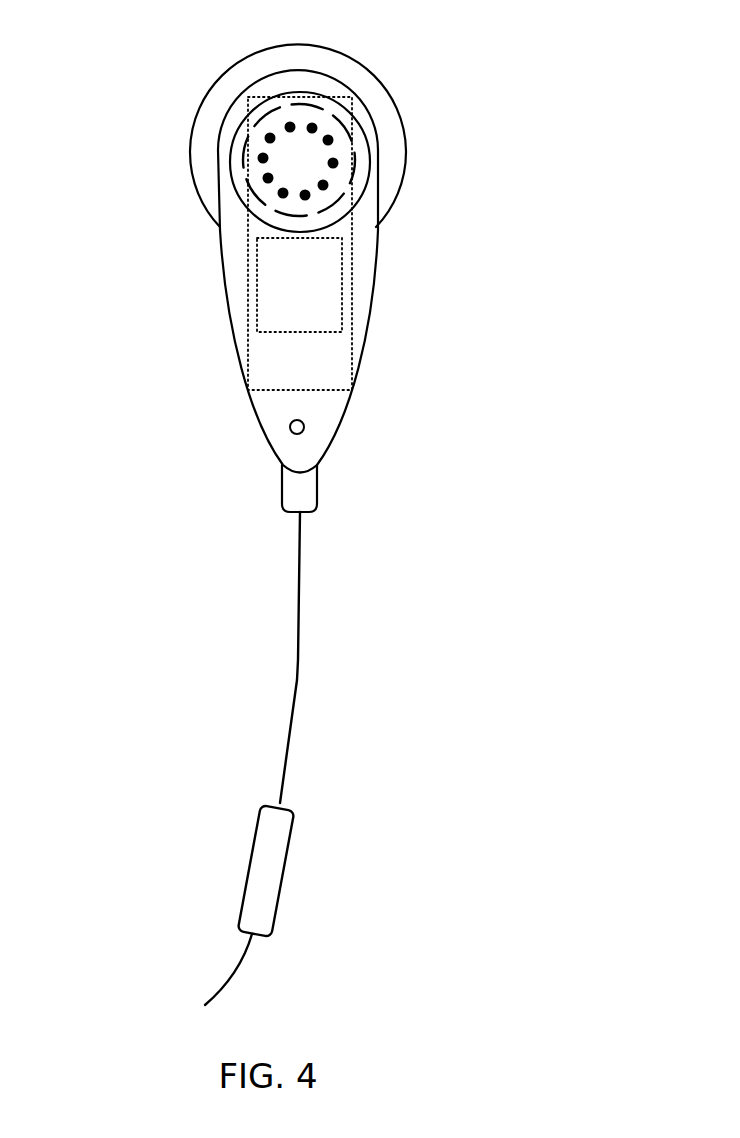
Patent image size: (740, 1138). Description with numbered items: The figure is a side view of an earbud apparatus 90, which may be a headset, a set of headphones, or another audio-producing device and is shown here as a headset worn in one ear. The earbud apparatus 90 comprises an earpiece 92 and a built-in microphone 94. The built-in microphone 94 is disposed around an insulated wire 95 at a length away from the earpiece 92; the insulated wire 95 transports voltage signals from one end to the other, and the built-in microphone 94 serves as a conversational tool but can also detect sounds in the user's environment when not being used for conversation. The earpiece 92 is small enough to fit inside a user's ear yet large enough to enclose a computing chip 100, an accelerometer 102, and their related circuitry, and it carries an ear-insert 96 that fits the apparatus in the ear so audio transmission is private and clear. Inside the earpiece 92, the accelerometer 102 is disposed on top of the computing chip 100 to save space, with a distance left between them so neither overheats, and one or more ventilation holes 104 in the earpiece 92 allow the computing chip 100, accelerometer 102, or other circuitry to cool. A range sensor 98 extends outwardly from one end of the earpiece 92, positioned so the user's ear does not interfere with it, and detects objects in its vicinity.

The earbud apparatus 90 is at (149, 163).
The earpiece 92 is at (242, 325).
The built-in microphone 94 is at (270, 857).
The insulated wire 95 is at (297, 678).
The ear-insert 96 is at (343, 65).
The range sensor 98 is at (338, 142).
The computing chip 100 is at (325, 375).
The accelerometer 102 is at (323, 290).
The ventilation holes 104 is at (300, 433).